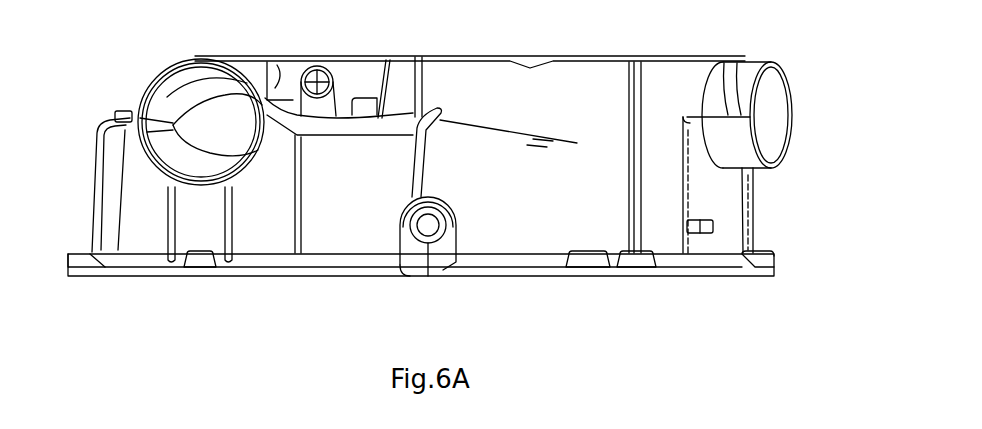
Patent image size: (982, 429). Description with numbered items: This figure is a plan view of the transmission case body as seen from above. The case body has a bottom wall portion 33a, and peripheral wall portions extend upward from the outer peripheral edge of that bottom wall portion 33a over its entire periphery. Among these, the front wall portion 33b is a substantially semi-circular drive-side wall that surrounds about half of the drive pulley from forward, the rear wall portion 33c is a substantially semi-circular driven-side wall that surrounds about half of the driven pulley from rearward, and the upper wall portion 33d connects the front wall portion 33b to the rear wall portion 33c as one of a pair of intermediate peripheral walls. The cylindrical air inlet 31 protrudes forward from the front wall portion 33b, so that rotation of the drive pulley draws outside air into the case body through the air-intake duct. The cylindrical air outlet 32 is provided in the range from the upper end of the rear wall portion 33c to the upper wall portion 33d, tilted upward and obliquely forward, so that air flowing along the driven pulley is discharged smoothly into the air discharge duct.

The cylindrical air inlet 31 is at (758, 62).
The cylindrical air outlet 32 is at (185, 58).
The bottom wall portion 33a is at (480, 58).
The front wall portion 33b is at (747, 200).
The rear wall portion 33c is at (100, 165).
The upper wall portion 33d is at (600, 78).